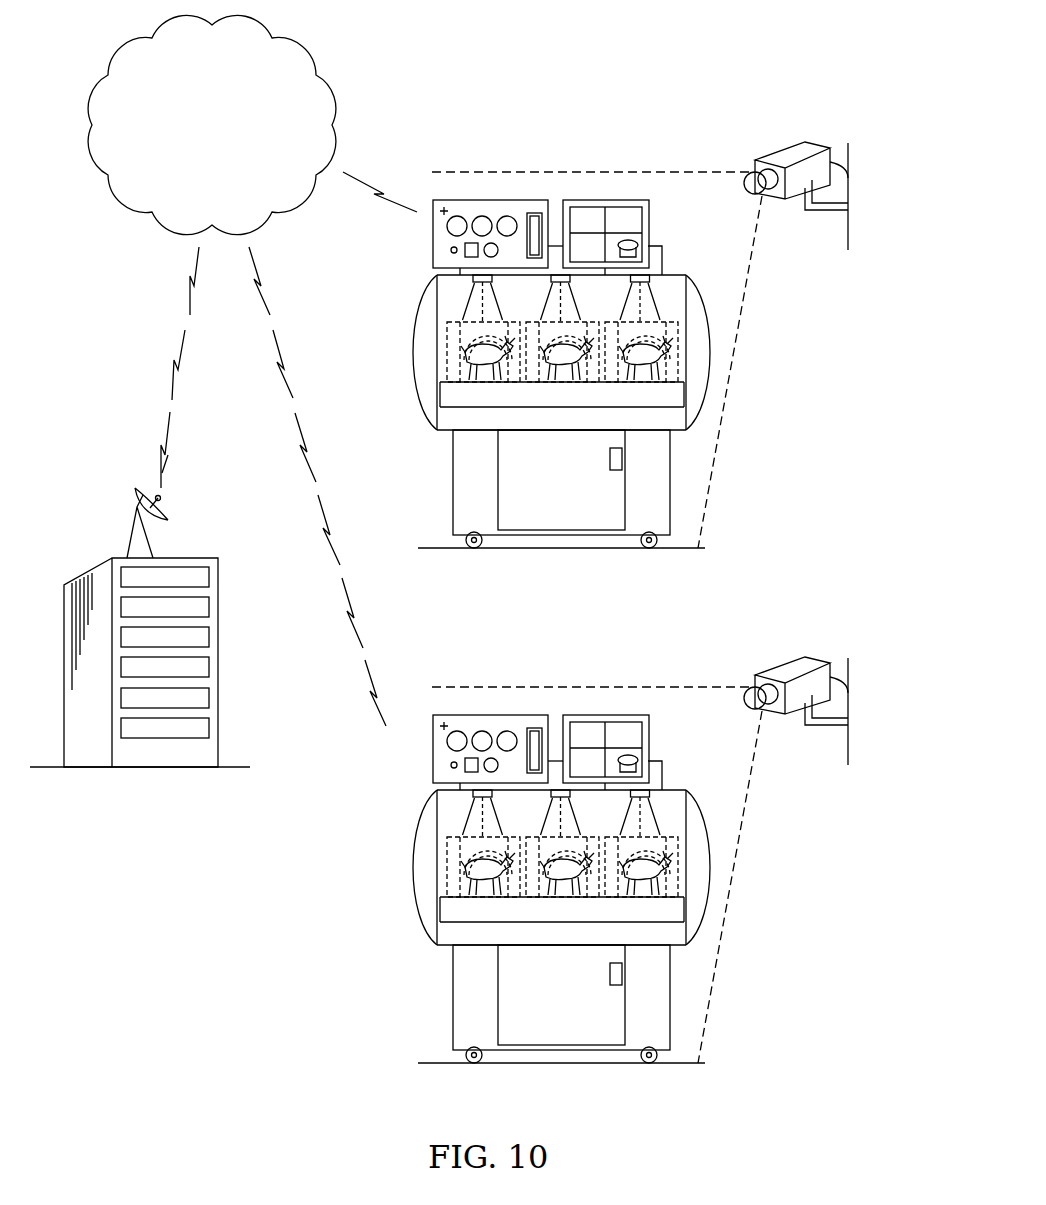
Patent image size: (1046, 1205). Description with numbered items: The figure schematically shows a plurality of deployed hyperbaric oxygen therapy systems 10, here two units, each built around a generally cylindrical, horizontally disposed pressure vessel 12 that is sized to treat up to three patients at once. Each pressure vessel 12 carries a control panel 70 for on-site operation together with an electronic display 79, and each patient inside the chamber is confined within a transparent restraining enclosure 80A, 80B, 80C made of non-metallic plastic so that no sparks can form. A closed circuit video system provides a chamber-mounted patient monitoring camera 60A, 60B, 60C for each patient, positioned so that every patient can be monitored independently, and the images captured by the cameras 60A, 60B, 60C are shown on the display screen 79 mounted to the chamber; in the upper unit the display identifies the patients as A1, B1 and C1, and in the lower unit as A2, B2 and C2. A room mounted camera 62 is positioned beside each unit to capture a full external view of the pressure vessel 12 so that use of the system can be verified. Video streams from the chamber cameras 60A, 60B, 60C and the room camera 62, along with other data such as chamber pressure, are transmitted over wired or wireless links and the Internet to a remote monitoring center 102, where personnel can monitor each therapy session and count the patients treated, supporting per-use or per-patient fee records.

The hyperbaric oxygen therapy system 10 is at (420, 88).
The pressure vessel 12 is at (450, 435).
The room mounted camera 62 is at (785, 158).
The control panel 70 is at (433, 237).
The electronic display 79 is at (655, 230).
The chamber-mounted patient monitoring camera 60A is at (475, 277).
The chamber-mounted patient monitoring camera 60B is at (555, 286).
The chamber-mounted patient monitoring camera 60C is at (682, 292).
The transparent restraining enclosure 80A is at (458, 370).
The transparent restraining enclosure 80B is at (598, 390).
The transparent restraining enclosure 80C is at (672, 408).
The animal compartment A1 is at (450, 347).
The animal compartment B1 is at (568, 387).
The animal compartment C1 is at (675, 357).
The animal compartment A2 is at (450, 862).
The animal compartment B2 is at (568, 902).
The animal compartment C2 is at (675, 872).
The remote monitoring center 102 is at (97, 575).